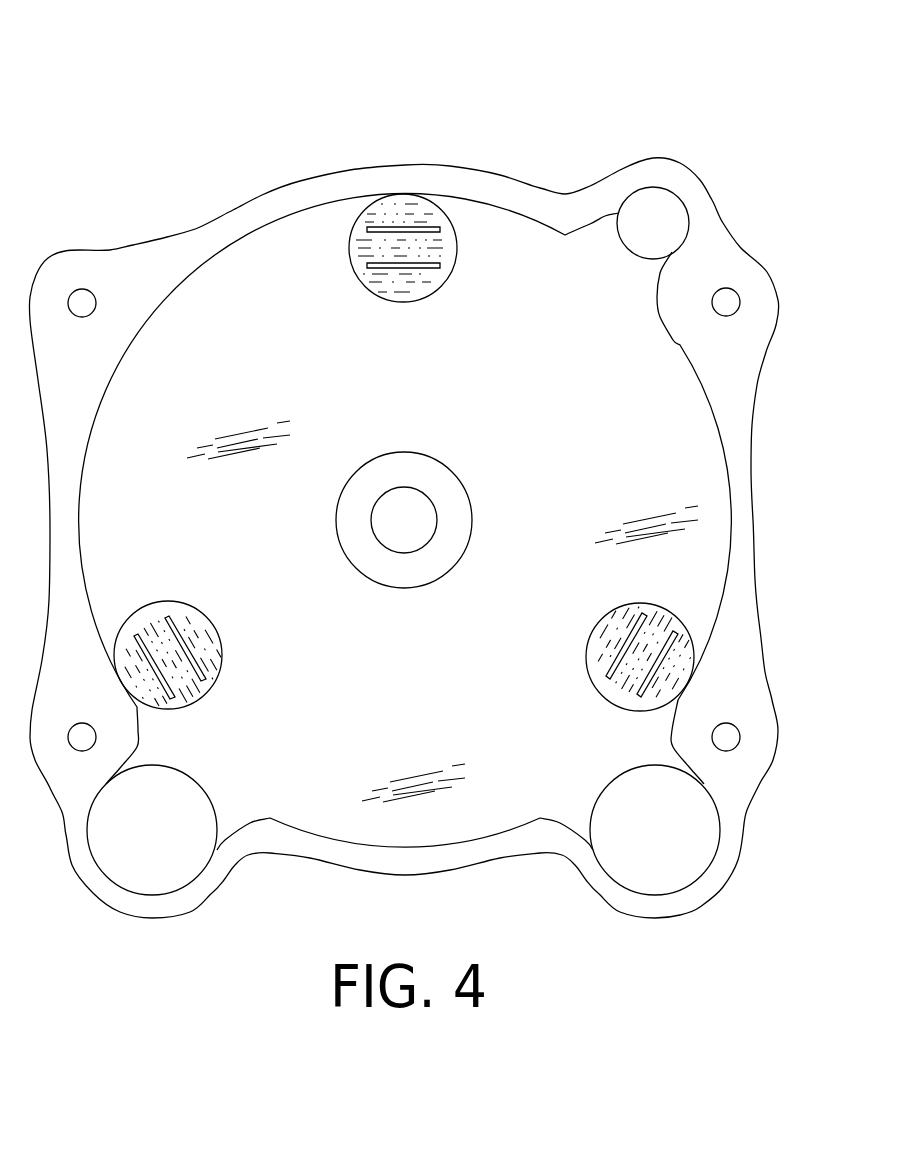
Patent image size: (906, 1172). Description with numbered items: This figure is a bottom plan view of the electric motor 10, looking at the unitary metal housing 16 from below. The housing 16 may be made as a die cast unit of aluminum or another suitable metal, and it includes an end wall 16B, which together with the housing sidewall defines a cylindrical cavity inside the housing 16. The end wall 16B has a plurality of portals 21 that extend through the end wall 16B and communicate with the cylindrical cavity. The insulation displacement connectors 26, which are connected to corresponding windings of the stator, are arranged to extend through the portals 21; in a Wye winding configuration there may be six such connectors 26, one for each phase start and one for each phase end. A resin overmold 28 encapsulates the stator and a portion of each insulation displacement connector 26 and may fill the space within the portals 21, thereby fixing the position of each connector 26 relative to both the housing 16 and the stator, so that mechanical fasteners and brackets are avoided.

The motor 10 is at (704, 71).
The unitary metal housing 16 is at (264, 195).
The end wall 16B is at (571, 467).
The portals 21 is at (388, 297).
The insulation displacement connectors 26 is at (428, 232).
The resin overmold 28 is at (372, 246).